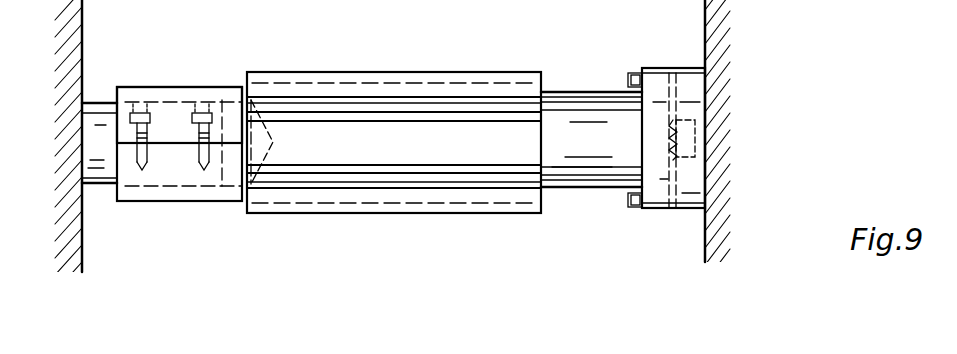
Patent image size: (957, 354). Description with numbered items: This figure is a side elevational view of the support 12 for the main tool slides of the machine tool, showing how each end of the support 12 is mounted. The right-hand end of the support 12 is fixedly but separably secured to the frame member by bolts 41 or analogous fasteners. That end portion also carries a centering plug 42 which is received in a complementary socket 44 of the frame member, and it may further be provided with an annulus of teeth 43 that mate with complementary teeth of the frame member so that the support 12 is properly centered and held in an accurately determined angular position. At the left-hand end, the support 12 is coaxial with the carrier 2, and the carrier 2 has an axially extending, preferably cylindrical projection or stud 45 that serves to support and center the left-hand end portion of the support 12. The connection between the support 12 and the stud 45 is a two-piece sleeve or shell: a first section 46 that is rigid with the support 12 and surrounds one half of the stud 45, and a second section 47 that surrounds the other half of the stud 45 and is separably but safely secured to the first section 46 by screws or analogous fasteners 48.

The carrier 2 is at (84, 212).
The support 12 is at (415, 76).
The bolts 41 is at (637, 72).
The centering plug 42 is at (683, 125).
The annulus of teeth 43 is at (673, 125).
The socket 44 is at (700, 142).
The stud 45 is at (100, 112).
The first section 46 is at (180, 201).
The second section 47 is at (207, 87).
The fasteners 48 is at (203, 114).